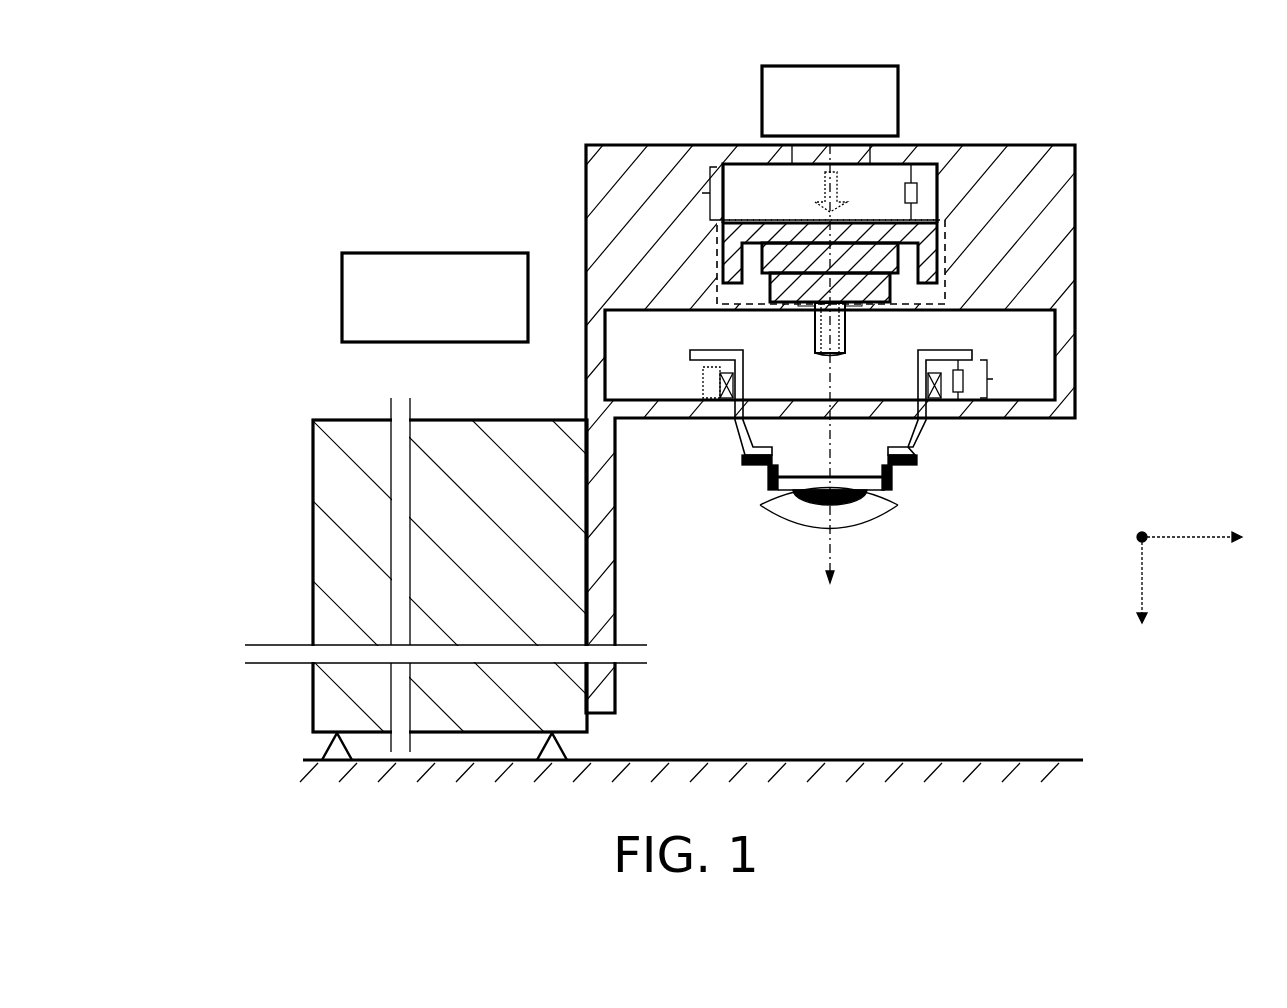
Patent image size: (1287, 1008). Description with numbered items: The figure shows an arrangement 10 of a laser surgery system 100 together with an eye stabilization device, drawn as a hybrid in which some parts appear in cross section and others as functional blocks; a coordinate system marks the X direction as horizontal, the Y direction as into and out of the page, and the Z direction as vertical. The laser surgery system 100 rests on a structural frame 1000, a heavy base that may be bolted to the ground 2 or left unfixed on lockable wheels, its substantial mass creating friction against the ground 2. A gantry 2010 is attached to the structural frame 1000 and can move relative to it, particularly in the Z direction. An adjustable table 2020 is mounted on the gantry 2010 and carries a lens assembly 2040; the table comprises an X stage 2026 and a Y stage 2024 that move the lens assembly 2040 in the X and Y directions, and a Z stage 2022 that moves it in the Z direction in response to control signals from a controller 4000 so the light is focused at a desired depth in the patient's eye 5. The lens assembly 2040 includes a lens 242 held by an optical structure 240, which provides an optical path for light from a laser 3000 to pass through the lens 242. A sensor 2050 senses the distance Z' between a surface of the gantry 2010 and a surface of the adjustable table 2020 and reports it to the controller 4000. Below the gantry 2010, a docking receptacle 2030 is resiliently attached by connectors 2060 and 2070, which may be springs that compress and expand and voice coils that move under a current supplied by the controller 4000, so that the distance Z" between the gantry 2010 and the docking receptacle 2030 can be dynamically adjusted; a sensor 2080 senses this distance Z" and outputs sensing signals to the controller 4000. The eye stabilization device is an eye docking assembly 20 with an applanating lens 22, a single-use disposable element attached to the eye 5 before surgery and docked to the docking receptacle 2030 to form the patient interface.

The arrangement 10 is at (1187, 108).
The laser surgery system 100 is at (307, 210).
The structural frame 1000 is at (312, 483).
The ground 2 is at (1040, 758).
The eye 5 is at (873, 523).
The eye docking assembly 20 is at (752, 487).
The applanating lens 22 is at (823, 475).
The optical structure 240 is at (843, 318).
The lens 242 is at (837, 355).
The gantry 2010 is at (585, 202).
The adjustable table 2020 is at (898, 305).
The Z stage 2022 is at (752, 220).
The Y stage 2024 is at (750, 288).
The X stage 2026 is at (780, 303).
The docking receptacle 2030 is at (923, 437).
The lens assembly 2040 is at (803, 345).
The sensor 2050 is at (905, 194).
The connector 2060 is at (695, 380).
The connector 2070 is at (727, 370).
The sensor 2080 is at (960, 372).
The laser 3000 is at (762, 104).
The controller 4000 is at (342, 293).